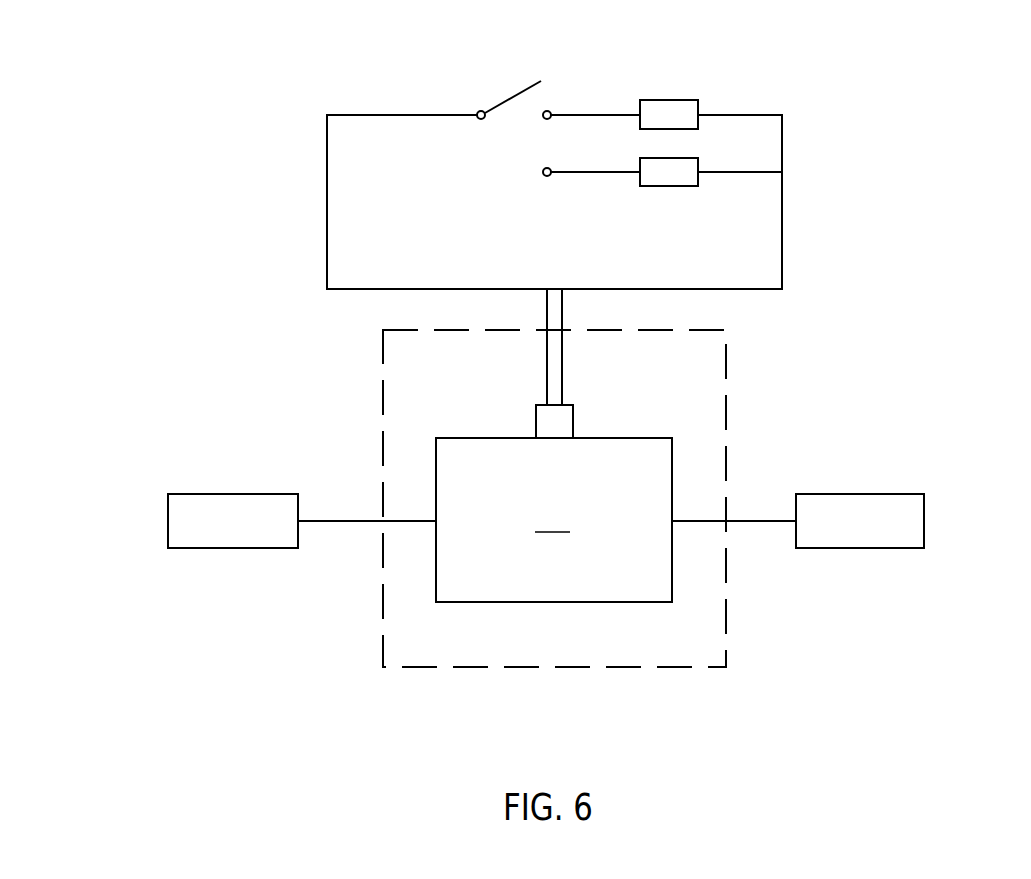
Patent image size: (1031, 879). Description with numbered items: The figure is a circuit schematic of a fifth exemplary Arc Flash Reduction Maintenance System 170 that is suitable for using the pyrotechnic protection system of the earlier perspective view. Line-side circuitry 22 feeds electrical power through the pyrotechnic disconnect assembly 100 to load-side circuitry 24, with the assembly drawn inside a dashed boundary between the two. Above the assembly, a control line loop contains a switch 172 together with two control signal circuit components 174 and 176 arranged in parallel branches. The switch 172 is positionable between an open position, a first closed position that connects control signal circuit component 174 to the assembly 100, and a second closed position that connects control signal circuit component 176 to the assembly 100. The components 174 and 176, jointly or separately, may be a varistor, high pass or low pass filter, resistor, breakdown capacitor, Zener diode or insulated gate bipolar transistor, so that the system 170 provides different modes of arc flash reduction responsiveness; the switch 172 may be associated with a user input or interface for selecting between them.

The Arc Flash Reduction Maintenance System 170 is at (936, 88).
The switch 172 is at (501, 74).
The control signal circuit component 174 is at (686, 82).
The control signal circuit component 176 is at (688, 203).
The pyrotechnic disconnect assembly 100 is at (554, 520).
The line-side circuitry 22 is at (244, 473).
The load-side circuitry 24 is at (874, 475).